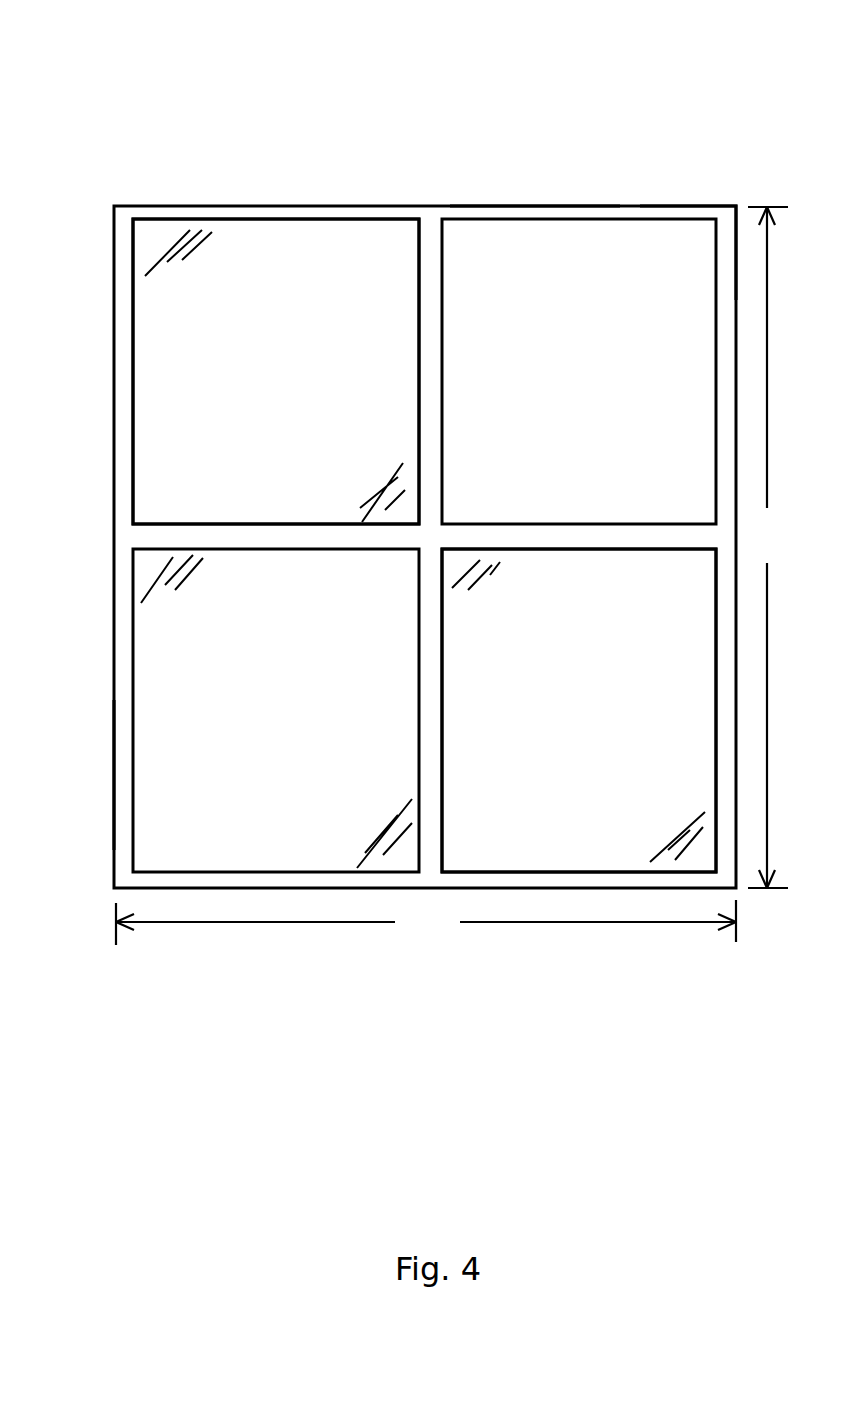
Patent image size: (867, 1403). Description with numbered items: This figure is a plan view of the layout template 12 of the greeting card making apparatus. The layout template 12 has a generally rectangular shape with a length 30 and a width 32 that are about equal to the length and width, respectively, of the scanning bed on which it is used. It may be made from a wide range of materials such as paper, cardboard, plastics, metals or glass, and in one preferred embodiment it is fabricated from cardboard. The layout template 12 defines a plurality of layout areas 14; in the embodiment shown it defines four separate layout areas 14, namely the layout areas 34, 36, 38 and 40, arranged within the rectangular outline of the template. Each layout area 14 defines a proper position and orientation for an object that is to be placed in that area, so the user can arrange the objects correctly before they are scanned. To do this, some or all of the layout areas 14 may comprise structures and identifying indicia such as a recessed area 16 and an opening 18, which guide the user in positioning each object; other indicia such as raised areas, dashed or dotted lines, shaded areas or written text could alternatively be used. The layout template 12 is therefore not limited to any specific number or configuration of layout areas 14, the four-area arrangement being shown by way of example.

The layout template 12 is at (140, 71).
The layout area 14 is at (281, 370).
The recessed area 16 is at (290, 727).
The opening 18 is at (672, 218).
The length 30 is at (426, 922).
The width 32 is at (768, 547).
The layout area 34 is at (295, 460).
The layout area 36 is at (535, 218).
The layout area 38 is at (133, 778).
The layout area 40 is at (600, 752).